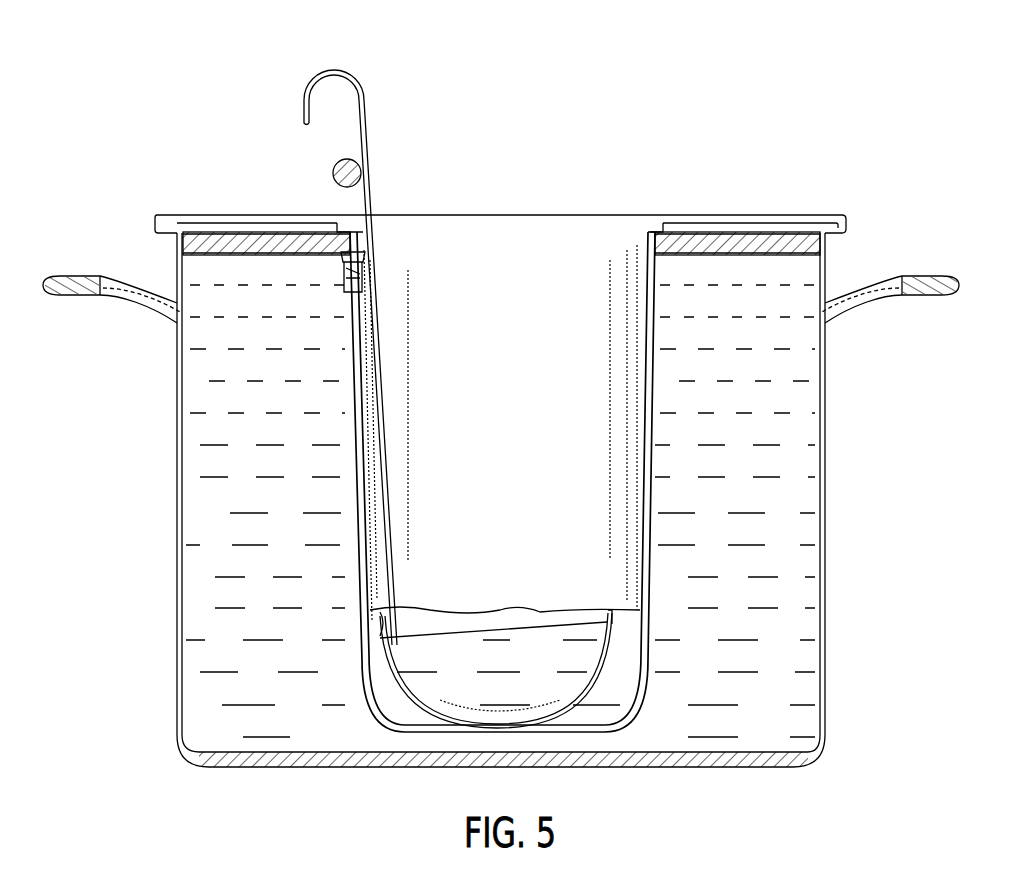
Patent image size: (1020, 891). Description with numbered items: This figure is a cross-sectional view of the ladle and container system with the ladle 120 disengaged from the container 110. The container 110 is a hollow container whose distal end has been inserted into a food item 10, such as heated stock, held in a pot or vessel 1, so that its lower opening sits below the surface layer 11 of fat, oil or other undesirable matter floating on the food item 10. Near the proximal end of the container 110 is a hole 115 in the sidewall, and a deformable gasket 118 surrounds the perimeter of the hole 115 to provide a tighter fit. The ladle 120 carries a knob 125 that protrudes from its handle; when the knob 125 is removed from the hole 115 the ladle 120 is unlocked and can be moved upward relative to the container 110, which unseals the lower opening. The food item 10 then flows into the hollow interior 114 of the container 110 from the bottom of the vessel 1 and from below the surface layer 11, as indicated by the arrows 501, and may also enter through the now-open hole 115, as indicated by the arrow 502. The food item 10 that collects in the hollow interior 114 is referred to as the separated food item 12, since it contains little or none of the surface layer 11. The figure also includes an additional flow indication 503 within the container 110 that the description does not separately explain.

The pot or vessel 1 is at (825, 468).
The food item 10 is at (251, 411).
The surface layer 11 is at (830, 248).
The separated food item 12 is at (415, 716).
The container 110 is at (650, 492).
The hollow interior 114 is at (491, 428).
The hole 115 is at (365, 270).
The gasket 118 is at (343, 268).
The ladle 120 is at (338, 70).
The knob 125 is at (333, 175).
The arrows 501 is at (421, 733).
The arrow 502 is at (365, 268).
The liquid flow direction 503 is at (381, 622).